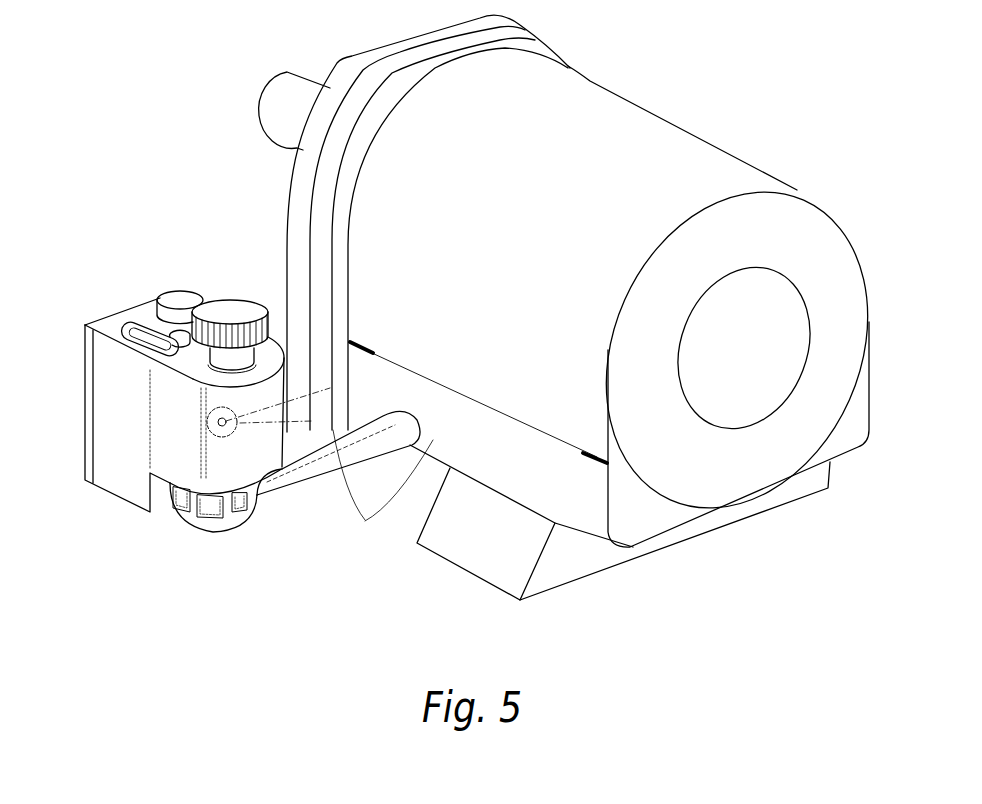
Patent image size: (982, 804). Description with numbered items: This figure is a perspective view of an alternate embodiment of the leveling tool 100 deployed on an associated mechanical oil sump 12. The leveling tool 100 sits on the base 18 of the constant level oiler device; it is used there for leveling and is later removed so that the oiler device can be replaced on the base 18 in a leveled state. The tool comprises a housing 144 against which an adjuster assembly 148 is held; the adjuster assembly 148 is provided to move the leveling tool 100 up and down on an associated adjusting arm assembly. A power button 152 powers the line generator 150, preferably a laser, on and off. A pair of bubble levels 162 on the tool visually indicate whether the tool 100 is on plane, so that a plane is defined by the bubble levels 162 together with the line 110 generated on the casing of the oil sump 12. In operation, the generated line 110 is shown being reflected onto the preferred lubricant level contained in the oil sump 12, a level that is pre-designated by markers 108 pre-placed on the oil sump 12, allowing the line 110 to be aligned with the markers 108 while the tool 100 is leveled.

The mechanical oil sump 12 is at (645, 96).
The base 18 is at (198, 523).
The leveling tool 100 is at (70, 291).
The markers 108 is at (356, 342).
The generated line 110 is at (433, 440).
The housing 144 is at (100, 423).
The adjuster assembly 148 is at (235, 310).
The line generator 150 is at (212, 430).
The power button 152 is at (185, 293).
The bubble levels 162 is at (182, 330).